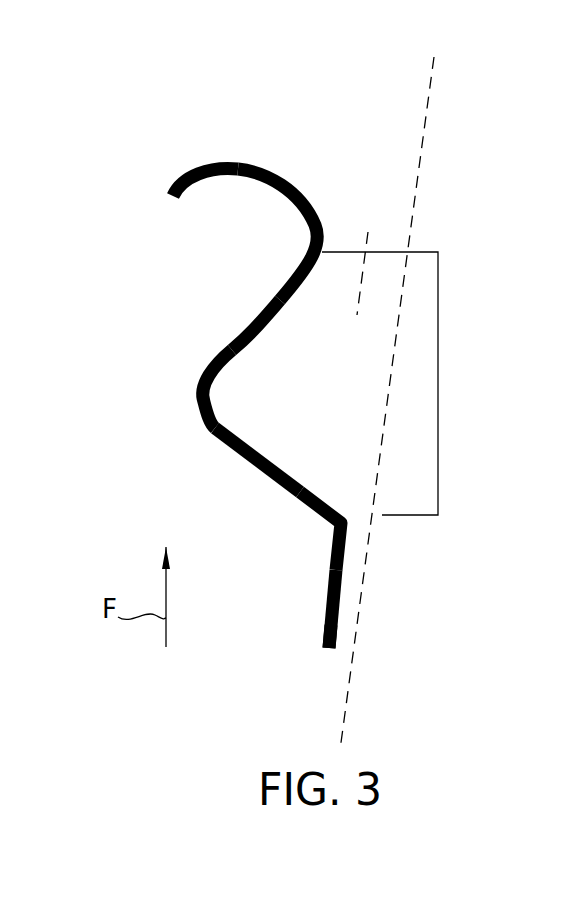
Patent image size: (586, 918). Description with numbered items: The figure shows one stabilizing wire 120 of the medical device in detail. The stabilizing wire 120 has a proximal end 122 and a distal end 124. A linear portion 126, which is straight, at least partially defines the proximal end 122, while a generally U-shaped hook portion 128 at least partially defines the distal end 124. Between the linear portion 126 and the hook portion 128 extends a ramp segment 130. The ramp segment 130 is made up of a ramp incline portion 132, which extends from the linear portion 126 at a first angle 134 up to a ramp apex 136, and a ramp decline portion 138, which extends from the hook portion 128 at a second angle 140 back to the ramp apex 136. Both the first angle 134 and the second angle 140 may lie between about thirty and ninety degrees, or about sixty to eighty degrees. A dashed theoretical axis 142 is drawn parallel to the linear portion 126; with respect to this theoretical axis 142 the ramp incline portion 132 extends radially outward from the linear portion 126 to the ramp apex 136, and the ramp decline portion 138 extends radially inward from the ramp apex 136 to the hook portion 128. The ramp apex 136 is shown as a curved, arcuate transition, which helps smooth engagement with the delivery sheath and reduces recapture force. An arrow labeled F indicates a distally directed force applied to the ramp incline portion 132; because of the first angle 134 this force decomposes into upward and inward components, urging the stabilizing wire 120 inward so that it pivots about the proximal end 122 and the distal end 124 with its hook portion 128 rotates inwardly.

The stabilizing wire 120 is at (180, 309).
The proximal end 122 is at (308, 660).
The distal end 124 is at (205, 145).
The linear portion 126 is at (331, 570).
The hook portion 128 is at (320, 212).
The ramp segment 130 is at (438, 392).
The ramp incline portion 132 is at (250, 462).
The first angle 134 is at (373, 478).
The ramp apex 136 is at (198, 399).
The ramp decline portion 138 is at (250, 329).
The second angle 140 is at (362, 290).
The theoretical axis 142 is at (430, 88).